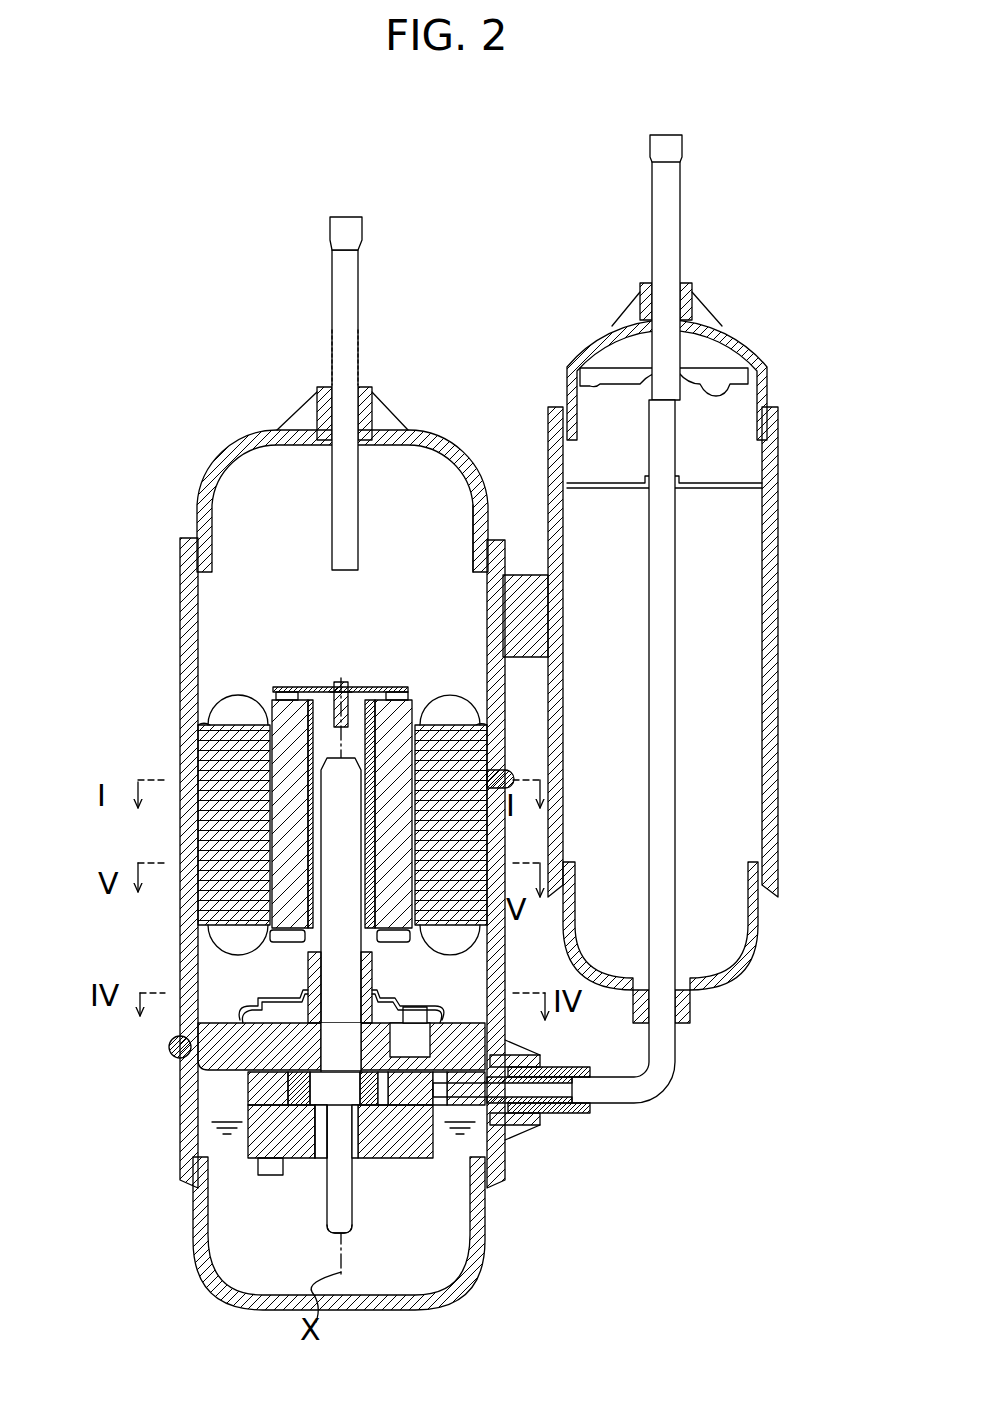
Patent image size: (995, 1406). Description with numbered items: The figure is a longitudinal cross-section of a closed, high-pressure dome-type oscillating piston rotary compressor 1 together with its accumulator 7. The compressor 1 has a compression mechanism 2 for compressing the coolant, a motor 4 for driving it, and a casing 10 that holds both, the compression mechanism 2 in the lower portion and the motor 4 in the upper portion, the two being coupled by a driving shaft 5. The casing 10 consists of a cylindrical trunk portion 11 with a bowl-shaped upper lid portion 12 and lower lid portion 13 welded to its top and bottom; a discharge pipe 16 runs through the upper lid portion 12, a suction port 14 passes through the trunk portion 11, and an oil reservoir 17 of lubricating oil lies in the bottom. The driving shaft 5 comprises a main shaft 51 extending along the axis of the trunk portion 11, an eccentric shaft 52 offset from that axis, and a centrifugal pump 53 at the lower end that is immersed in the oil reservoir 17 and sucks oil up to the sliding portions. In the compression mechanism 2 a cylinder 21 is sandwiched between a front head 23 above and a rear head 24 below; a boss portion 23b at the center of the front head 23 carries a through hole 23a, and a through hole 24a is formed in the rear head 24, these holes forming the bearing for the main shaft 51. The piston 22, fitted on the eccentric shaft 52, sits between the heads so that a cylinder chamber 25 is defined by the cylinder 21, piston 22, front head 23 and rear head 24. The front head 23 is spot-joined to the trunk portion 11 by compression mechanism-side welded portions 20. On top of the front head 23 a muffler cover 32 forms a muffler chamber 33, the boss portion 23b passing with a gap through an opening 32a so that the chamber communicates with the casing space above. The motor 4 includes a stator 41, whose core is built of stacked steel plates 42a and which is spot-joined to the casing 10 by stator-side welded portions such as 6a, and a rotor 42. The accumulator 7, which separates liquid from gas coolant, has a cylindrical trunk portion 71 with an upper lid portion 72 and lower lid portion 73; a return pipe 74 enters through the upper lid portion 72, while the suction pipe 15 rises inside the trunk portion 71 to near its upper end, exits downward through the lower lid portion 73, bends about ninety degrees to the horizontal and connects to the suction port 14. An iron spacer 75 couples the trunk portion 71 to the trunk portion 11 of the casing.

The closed compressor 1 is at (190, 248).
The compression mechanism 2 is at (243, 1098).
The motor 4 is at (242, 700).
The driving shaft 5 is at (337, 760).
The stator-side welded portion 6a is at (510, 770).
The accumulator 7 is at (750, 335).
The casing 10 is at (212, 462).
The trunk portion 11 is at (180, 607).
The upper lid portion 12 is at (455, 440).
The lower lid portion 13 is at (488, 1270).
The suction port 14 is at (565, 1113).
The suction pipe 15 is at (640, 1103).
The discharge pipe 16 is at (360, 265).
The oil reservoir 17 is at (262, 1243).
The compression mechanism-side welded portion 20 is at (167, 1048).
The cylinder 21 is at (248, 1083).
The piston 22 is at (318, 1140).
The front head 23 is at (452, 1023).
The through hole 23a is at (300, 943).
The boss portion 23b is at (320, 958).
The rear head 24 is at (437, 1118).
The through hole 24a is at (322, 1172).
The cylinder chamber 25 is at (382, 1110).
The muffler cover 32 is at (250, 1012).
The opening 32a is at (378, 1005).
The muffler chamber 33 is at (277, 1012).
The stator 41 is at (200, 715).
The rotor 42 is at (412, 705).
The steel plates 42a is at (205, 752).
The main shaft 51 is at (350, 968).
The eccentric shaft 52 is at (355, 1105).
The centrifugal pump 53 is at (352, 1220).
The trunk portion 71 is at (780, 585).
The upper lid portion 72 is at (590, 336).
The lower lid portion 73 is at (758, 930).
The return pipe 74 is at (682, 206).
The iron spacer 75 is at (528, 575).